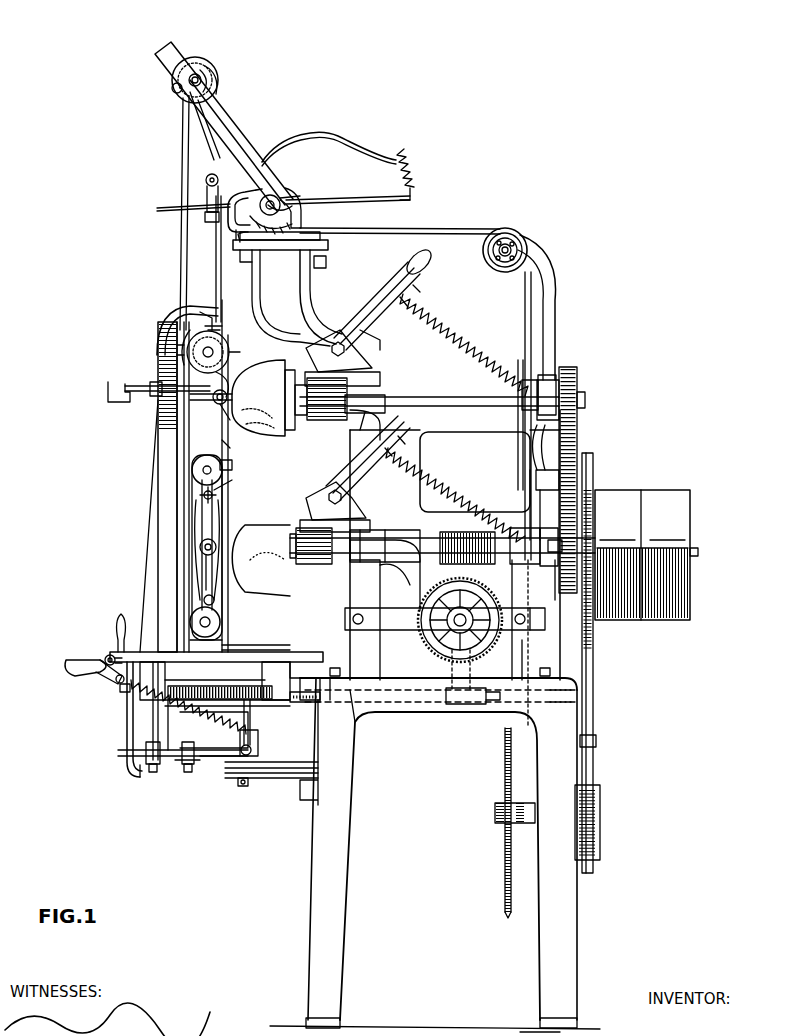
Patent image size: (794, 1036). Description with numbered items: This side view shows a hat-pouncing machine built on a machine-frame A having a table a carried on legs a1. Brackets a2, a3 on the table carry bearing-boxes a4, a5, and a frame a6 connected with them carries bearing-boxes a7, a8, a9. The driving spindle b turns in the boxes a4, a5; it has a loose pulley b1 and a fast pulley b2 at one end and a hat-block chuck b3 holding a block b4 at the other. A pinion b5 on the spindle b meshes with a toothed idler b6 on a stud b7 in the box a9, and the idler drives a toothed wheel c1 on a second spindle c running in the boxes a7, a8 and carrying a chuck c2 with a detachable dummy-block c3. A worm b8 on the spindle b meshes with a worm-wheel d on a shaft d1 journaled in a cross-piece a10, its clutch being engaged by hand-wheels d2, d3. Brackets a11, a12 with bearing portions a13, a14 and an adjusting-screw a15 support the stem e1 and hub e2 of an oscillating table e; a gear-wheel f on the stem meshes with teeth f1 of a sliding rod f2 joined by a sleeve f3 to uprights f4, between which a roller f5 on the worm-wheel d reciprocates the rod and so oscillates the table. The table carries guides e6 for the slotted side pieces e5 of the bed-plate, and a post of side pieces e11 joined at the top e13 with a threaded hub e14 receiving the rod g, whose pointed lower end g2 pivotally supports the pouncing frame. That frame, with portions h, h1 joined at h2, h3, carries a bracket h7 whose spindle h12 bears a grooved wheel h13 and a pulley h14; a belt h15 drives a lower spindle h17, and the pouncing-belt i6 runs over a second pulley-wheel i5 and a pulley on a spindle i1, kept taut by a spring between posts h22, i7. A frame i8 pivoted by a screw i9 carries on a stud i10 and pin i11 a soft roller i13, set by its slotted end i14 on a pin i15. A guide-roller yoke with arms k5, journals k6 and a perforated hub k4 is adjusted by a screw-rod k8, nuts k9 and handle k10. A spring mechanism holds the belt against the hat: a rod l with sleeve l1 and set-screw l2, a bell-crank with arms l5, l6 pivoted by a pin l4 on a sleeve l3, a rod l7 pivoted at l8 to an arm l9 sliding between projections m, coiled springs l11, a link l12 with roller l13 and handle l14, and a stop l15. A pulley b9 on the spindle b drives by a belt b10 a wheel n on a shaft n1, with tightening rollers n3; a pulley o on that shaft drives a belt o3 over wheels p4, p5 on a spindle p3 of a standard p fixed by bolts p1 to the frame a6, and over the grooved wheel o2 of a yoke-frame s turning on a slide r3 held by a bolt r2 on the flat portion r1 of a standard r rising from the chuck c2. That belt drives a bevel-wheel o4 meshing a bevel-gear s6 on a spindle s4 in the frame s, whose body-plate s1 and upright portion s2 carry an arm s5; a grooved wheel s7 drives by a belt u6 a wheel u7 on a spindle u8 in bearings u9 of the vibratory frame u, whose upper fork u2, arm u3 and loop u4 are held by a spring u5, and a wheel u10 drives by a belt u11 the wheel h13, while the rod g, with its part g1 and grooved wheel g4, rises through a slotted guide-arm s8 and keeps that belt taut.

The table a is at (412, 700).
The legs a1 is at (312, 915).
The bracket a11 is at (322, 690).
The bearing portion a13 is at (305, 700).
The bracket a12 is at (302, 790).
The bearing portion a14 is at (236, 780).
The adjusting-screw a15 is at (244, 782).
The pulley-wheel o is at (500, 862).
The belt o3 is at (476, 229).
The bevel-wheel o4 is at (352, 228).
The grooved wheel portion o2 is at (320, 247).
The wheel n is at (592, 798).
The shaft n1 is at (494, 812).
The adjustable rollers n3 is at (590, 742).
The driving shaft or spindle b is at (698, 552).
The loose pulley b1 is at (672, 492).
The fast pulley b2 is at (628, 492).
The hat-block chuck b3 is at (320, 500).
The block b4 is at (300, 568).
The pinion b5 is at (560, 598).
The toothed idler b6 is at (595, 462).
The stud or pin b7 is at (596, 474).
The worm b8 is at (470, 532).
The pulley-wheel b9 is at (594, 640).
The belt b10 is at (590, 668).
The shaft or spindle c is at (482, 402).
The toothed wheel c1 is at (572, 372).
The hat-block chuck c2 is at (350, 346).
The dummy-block c3 is at (289, 398).
The rod or standard p is at (552, 300).
The bolts p1 is at (550, 374).
The horizontal spindle p3 is at (495, 258).
The roller or wheel p4 is at (506, 264).
The roller or wheel p5 is at (530, 246).
The arm or standard r is at (306, 298).
The flat portion r1 is at (275, 258).
The set-screw or bolt r2 is at (326, 263).
The slide r3 is at (252, 256).
The yoke-frame s is at (264, 205).
The body-plate s1 is at (254, 248).
The upwardly-extending portion s2 is at (251, 243).
The spindle or shaft s4 is at (296, 205).
The arm or rod s5 is at (382, 197).
The bevel-gear s6 is at (292, 216).
The grooved wheel s7 is at (280, 192).
The slotted guide-arm s8 is at (180, 208).
The oscillating or vibratory frame u is at (228, 128).
The upper forked end u2 is at (184, 64).
The backwardly-extending arm u3 is at (335, 137).
The hook end or loop u4 is at (408, 156).
The spring u5 is at (414, 182).
The belt u6 is at (236, 104).
The grooved wheel u7 is at (214, 70).
The spindle u8 is at (210, 80).
The bearings u9 is at (204, 68).
The grooved wheel u10 is at (176, 86).
The belt u11 is at (214, 166).
The rod g is at (208, 258).
The gear rim g1 is at (226, 336).
The gear g2 is at (226, 348).
The grooved wheel g4 is at (206, 180).
The frame portion h is at (175, 602).
The frame portion h1 is at (200, 528).
The connecting part h2 is at (166, 448).
The connecting part h3 is at (258, 649).
The bracket h7 is at (190, 344).
The shaft or spindle h12 is at (260, 335).
The grooved wheel h13 is at (256, 476).
The grooved pulley-wheel h14 is at (164, 318).
The belt h15 is at (230, 458).
The shaft or spindle h17 is at (216, 630).
The post h22 is at (232, 470).
The oscillating table or disk e is at (296, 662).
The stem or post e1 is at (270, 766).
The hub e2 is at (227, 693).
The longitudinal side pieces e5 is at (310, 664).
The guides e6 is at (215, 681).
The side pieces e11 is at (174, 350).
The top connection e13 is at (202, 314).
The screw-threaded hub e14 is at (218, 322).
The perforated hub k4 is at (158, 384).
The forwardly-extending arms k5 is at (224, 406).
The journals k6 is at (236, 402).
The screw-rod k8 is at (144, 382).
The nuts k9 is at (166, 400).
The handle k10 is at (118, 386).
The shaft or spindle i1 is at (206, 470).
The second pulley-wheel i5 is at (192, 486).
The pouncing-belt i6 is at (242, 520).
The post i7 is at (212, 640).
The frame i8 is at (208, 578).
The screw i9 is at (216, 600).
The stud i10 is at (200, 545).
The pin i11 is at (200, 560).
The roller i13 is at (214, 548).
The upper slotted end i14 is at (243, 487).
The pin or stud i15 is at (218, 490).
The machine-frame A is at (434, 545).
The bracket a2 is at (350, 600).
The bracket a3 is at (532, 648).
The bearing-box a4 is at (360, 572).
The bearing-box a5 is at (548, 566).
The frame a6 is at (446, 440).
The bearing-box a7 is at (372, 420).
The bearing-box a8 is at (568, 422).
The bearing-box a9 is at (568, 442).
The cross-piece a10 is at (352, 632).
The worm-wheel d is at (420, 590).
The shaft d1 is at (446, 620).
The hand-wheel d2 is at (540, 632).
The hand-wheel d3 is at (432, 648).
The gear-wheel f is at (218, 702).
The teeth f1 is at (190, 702).
The rod f2 is at (560, 688).
The sleeve f3 is at (504, 694).
The vertical posts or uprights f4 is at (460, 609).
The roller or wheel f5 is at (466, 700).
The rod l is at (153, 710).
The sleeve l1 is at (172, 772).
The set-screw l2 is at (150, 772).
The sleeve l3 is at (228, 738).
The pin or stud l4 is at (256, 752).
The arm l5 is at (214, 768).
The arm l6 is at (252, 740).
The rod l7 is at (190, 766).
The pivot l8 is at (122, 752).
The upwardly-extending arm l9 is at (124, 726).
The coiled springs l11 is at (184, 704).
The link l12 is at (122, 694).
The roller l13 is at (112, 690).
The handle l14 is at (80, 668).
The stop l15 is at (118, 768).
The projections m is at (109, 654).